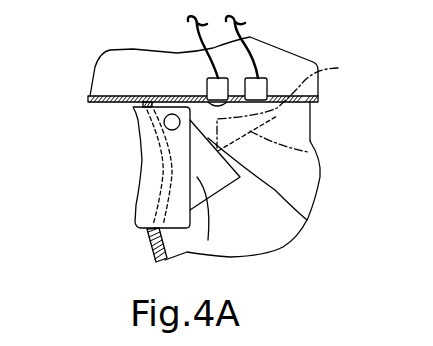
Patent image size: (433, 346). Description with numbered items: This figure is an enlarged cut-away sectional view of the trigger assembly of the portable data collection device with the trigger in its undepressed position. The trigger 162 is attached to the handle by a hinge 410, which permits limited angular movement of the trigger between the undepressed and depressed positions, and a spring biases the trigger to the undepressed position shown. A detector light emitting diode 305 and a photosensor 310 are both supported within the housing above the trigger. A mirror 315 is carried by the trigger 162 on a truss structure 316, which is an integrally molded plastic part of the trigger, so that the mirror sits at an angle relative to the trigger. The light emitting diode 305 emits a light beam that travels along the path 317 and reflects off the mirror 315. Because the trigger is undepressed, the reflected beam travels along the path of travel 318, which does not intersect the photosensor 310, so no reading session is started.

The detector light emitting diode 305 is at (207, 90).
The photosensor 310 is at (258, 88).
The light beam path 317 is at (338, 68).
The path of travel 318 is at (308, 152).
The hinge 410 is at (164, 127).
The trigger 162 is at (140, 165).
The mirror 315 is at (307, 220).
The truss structure 316 is at (208, 240).